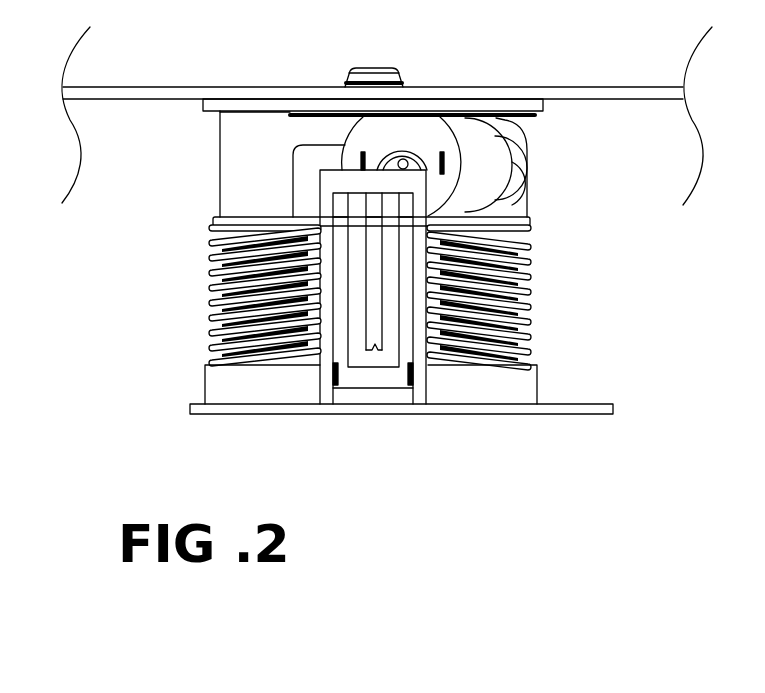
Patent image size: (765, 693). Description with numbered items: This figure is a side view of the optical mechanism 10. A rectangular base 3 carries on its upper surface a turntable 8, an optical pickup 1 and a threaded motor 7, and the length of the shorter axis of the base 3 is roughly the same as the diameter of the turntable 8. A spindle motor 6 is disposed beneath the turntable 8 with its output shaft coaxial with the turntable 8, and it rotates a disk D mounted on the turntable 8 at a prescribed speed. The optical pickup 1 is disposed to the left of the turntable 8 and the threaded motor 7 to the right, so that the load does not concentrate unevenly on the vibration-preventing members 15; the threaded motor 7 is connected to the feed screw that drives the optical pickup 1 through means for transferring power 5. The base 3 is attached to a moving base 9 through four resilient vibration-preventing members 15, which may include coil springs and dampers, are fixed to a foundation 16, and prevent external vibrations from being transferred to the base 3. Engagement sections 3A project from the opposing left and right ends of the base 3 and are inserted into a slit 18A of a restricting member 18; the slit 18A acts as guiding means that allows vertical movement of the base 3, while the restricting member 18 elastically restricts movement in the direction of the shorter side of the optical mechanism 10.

The disk D is at (170, 86).
The optical pickup 1 is at (220, 140).
The base 3 is at (240, 214).
The engagement section 3A is at (373, 273).
The means for transferring power 5 is at (533, 148).
The spindle motor 6 is at (325, 145).
The threaded motor 7 is at (428, 123).
The turntable 8 is at (381, 68).
The moving base 9 is at (588, 403).
The optical mechanism 10 is at (115, 277).
The vibration-preventing members 15 is at (212, 283).
The foundation 16 is at (226, 395).
The restricting member 18 is at (357, 332).
The slit 18A is at (375, 343).